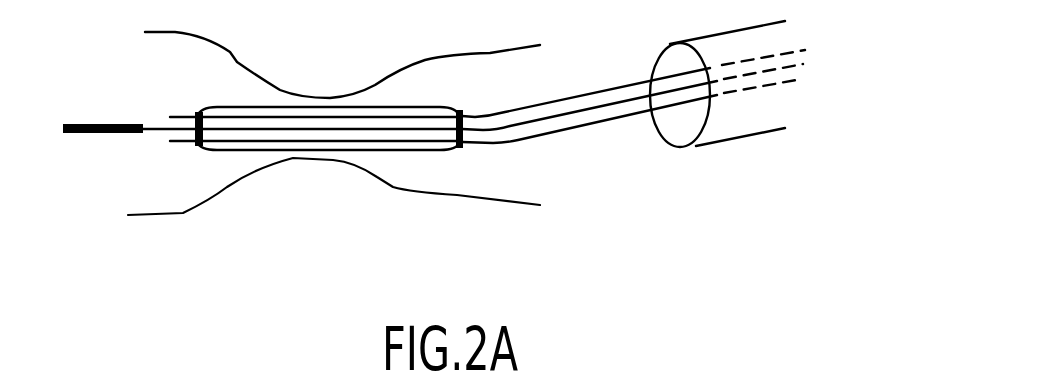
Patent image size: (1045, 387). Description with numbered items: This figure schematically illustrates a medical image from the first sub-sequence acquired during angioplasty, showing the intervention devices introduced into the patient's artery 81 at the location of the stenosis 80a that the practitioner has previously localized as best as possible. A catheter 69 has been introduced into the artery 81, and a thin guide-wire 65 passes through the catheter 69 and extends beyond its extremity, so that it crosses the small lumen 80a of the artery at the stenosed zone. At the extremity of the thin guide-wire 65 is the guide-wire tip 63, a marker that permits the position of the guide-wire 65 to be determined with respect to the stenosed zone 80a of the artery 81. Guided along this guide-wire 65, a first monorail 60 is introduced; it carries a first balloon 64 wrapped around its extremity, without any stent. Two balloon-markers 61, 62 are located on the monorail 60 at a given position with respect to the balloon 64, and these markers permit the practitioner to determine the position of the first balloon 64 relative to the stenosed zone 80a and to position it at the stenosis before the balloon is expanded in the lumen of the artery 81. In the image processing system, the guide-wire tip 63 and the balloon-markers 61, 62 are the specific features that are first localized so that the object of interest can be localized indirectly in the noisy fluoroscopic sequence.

The stenosis 80a is at (306, 89).
The first monorail 60 is at (613, 120).
The balloon-marker 61 is at (188, 155).
The balloon-marker 62 is at (466, 158).
The guide-wire tip 63 is at (92, 135).
The first balloon 64 is at (390, 150).
The guide-wire 65 is at (645, 110).
The catheter 69 is at (770, 132).
The artery 81 is at (163, 218).